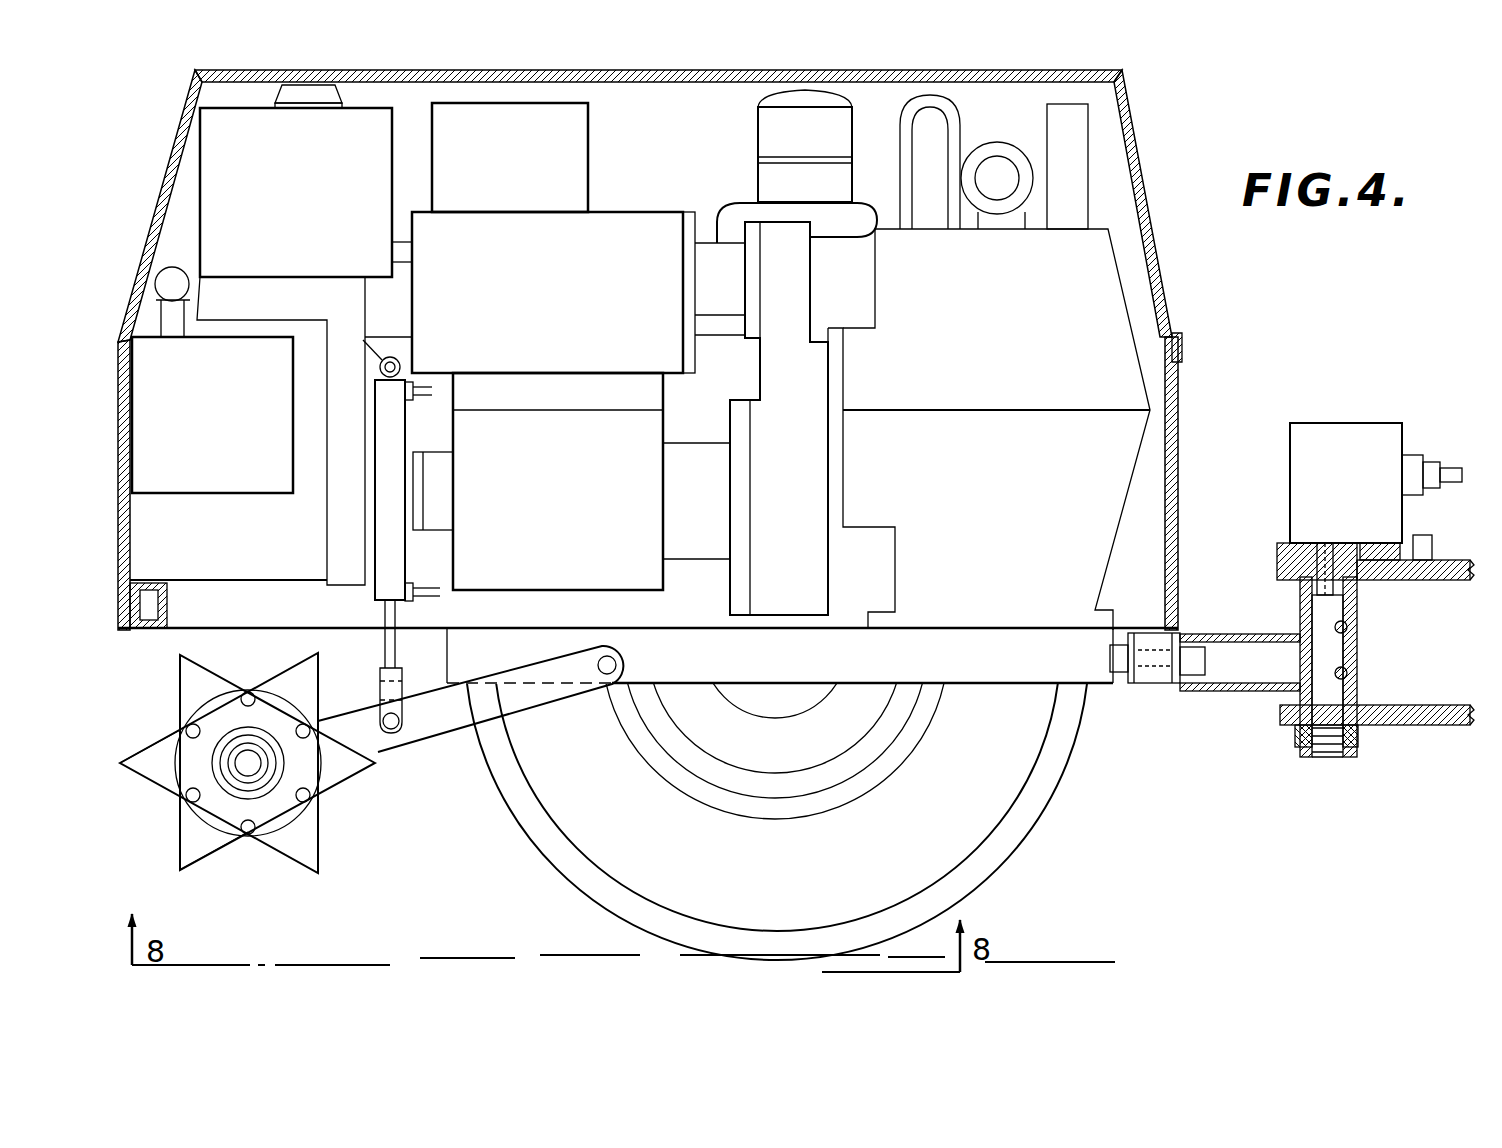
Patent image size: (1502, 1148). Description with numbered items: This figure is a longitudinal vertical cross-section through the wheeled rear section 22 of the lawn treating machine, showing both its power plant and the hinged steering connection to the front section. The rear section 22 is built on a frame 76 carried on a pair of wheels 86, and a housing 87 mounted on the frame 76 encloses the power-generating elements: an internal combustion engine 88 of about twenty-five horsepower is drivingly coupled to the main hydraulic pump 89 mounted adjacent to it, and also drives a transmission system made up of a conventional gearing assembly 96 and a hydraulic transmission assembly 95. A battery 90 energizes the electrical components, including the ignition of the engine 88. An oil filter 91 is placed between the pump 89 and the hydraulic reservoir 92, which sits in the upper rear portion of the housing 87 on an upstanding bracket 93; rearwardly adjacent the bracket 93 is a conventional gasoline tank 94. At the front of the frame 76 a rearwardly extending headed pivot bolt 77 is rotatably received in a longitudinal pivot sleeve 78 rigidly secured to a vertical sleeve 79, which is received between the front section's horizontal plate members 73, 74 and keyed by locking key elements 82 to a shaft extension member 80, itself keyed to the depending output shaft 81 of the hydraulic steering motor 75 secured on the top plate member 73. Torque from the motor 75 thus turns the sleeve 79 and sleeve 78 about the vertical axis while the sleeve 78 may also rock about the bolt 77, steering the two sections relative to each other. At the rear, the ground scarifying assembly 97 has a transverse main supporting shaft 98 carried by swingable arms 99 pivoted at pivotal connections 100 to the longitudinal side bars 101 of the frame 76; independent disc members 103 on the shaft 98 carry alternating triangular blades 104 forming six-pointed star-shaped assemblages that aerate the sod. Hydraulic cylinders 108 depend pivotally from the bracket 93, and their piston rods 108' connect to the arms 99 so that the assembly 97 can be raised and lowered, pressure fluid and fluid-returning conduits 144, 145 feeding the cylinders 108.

The rear section 22 is at (1138, 134).
The top plate member 73 is at (1457, 585).
The plate member 74 is at (1428, 712).
The hydraulic steering motor 75 is at (1310, 425).
The frame 76 is at (978, 685).
The pivot bolt 77 is at (1150, 630).
The pivot sleeve 78 is at (1218, 630).
The vertical sleeve 79 is at (1300, 610).
The shaft extension member 80 is at (1330, 655).
The output shaft 81 is at (1327, 540).
The locking key elements 82 is at (1352, 627).
The wheels 86 is at (1050, 800).
The housing 87 is at (1177, 410).
The internal combustion engine 88 is at (1092, 303).
The main hydraulic pump 89 is at (645, 218).
The battery 90 is at (582, 127).
The oil filter 91 is at (843, 137).
The hydraulic reservoir 92 is at (373, 123).
The upstanding bracket 93 is at (330, 518).
The gasoline tank 94 is at (185, 493).
The hydraulic transmission assembly 95 is at (655, 580).
The gearing assembly 96 is at (812, 492).
The ground scarifying assembly 97 is at (316, 841).
The main supporting shaft 98 is at (255, 775).
The swingable arms 99 is at (430, 725).
The pivotal connections 100 is at (617, 660).
The longitudinal side bars 101 is at (742, 684).
The disc members 103 is at (177, 760).
The triangular blades 104 is at (202, 850).
The hydraulic cylinders 108 is at (414, 470).
The piston rods 108' is at (365, 666).
The pressure fluid conduit 144 is at (430, 388).
The fluid-returning conduit 145 is at (438, 598).